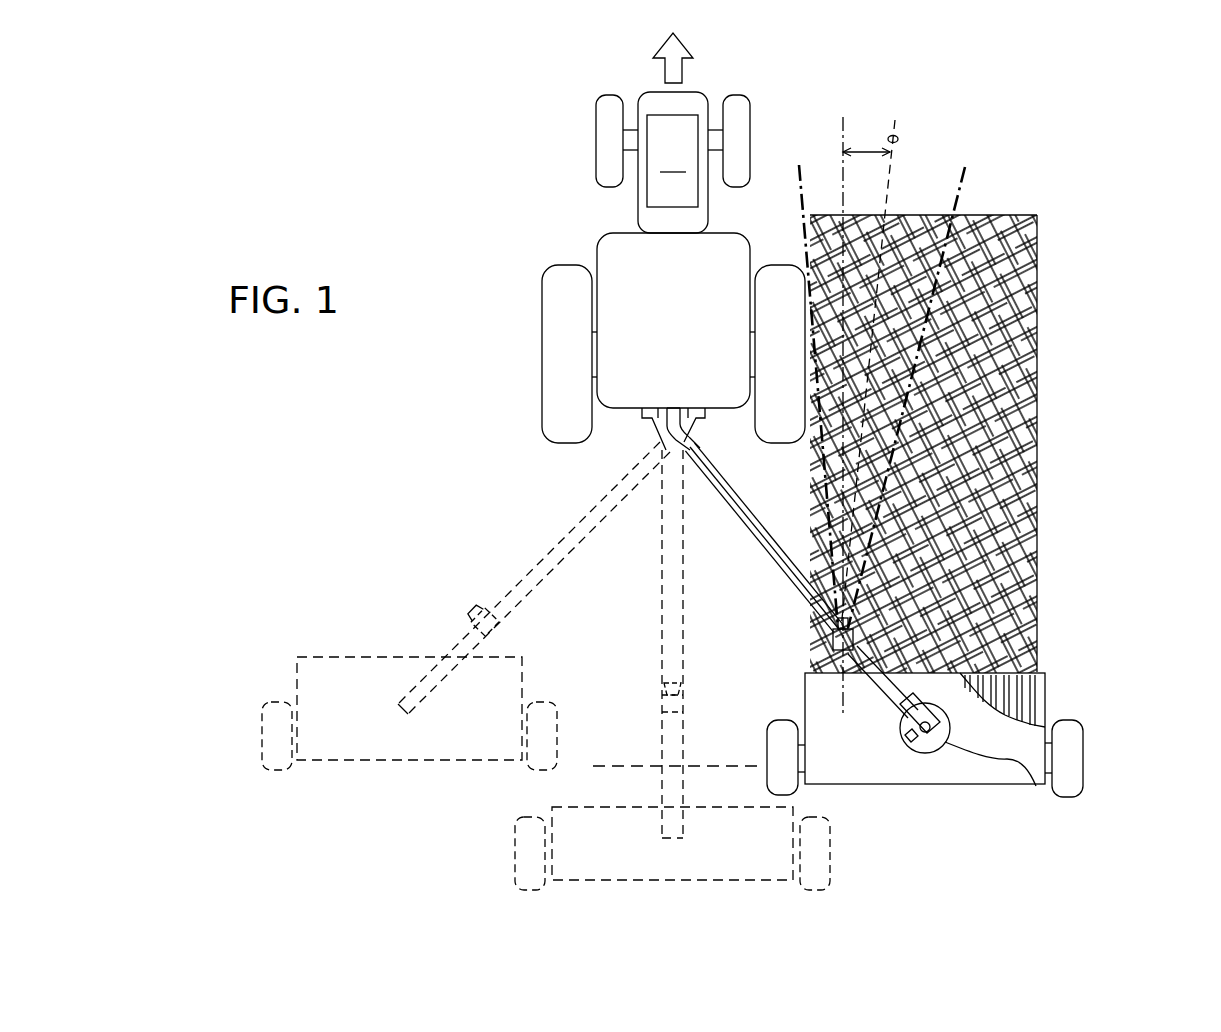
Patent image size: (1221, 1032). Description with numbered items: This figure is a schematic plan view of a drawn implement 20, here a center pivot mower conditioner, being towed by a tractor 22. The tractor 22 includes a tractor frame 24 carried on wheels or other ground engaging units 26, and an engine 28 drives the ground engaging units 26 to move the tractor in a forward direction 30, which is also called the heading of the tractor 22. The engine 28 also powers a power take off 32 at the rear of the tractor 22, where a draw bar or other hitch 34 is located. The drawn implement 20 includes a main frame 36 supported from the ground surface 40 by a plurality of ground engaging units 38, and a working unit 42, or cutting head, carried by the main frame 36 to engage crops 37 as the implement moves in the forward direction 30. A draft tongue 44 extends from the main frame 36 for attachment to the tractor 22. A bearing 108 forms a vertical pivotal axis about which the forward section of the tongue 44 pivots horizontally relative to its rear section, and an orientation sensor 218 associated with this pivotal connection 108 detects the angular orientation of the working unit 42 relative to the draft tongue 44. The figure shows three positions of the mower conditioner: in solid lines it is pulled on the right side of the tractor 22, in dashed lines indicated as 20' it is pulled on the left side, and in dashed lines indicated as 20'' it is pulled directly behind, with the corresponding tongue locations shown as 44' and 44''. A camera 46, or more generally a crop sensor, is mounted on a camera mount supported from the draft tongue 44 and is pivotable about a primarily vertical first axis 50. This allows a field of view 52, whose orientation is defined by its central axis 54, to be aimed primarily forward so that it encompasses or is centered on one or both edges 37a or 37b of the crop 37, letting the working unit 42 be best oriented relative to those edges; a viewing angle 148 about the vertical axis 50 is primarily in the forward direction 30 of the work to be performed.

The drawn implement 20 is at (1082, 606).
The center pivot mower conditioner in left-side position 20' is at (409, 752).
The center pivot mower conditioner in directly-behind position 20'' is at (672, 873).
The tractor 22 is at (710, 72).
The tractor frame 24 is at (700, 176).
The ground engaging units 26 is at (606, 108).
The engine 28 is at (672, 161).
The forward direction 30 is at (662, 70).
The power take off 32 is at (676, 410).
The hitch 34 is at (668, 448).
The main frame 36 is at (955, 785).
The crops 37 is at (978, 502).
The edge of the crop 37a is at (820, 474).
The edge of the crop 37b is at (1037, 427).
The ground engaging units 38 is at (783, 735).
The ground surface 40 is at (1095, 346).
The working unit 42 is at (1030, 688).
The draft tongue 44 is at (812, 592).
The draft tongue in left-side position 44' is at (534, 578).
The draft tongue in directly-behind position 44'' is at (675, 644).
The camera 46 is at (972, 563).
The first axis 50 is at (842, 650).
The field of view 52 is at (968, 175).
The central axis 54 is at (898, 139).
The bearing 108 is at (1036, 786).
The viewing angle 148 is at (868, 150).
The orientation sensor 218 is at (918, 753).